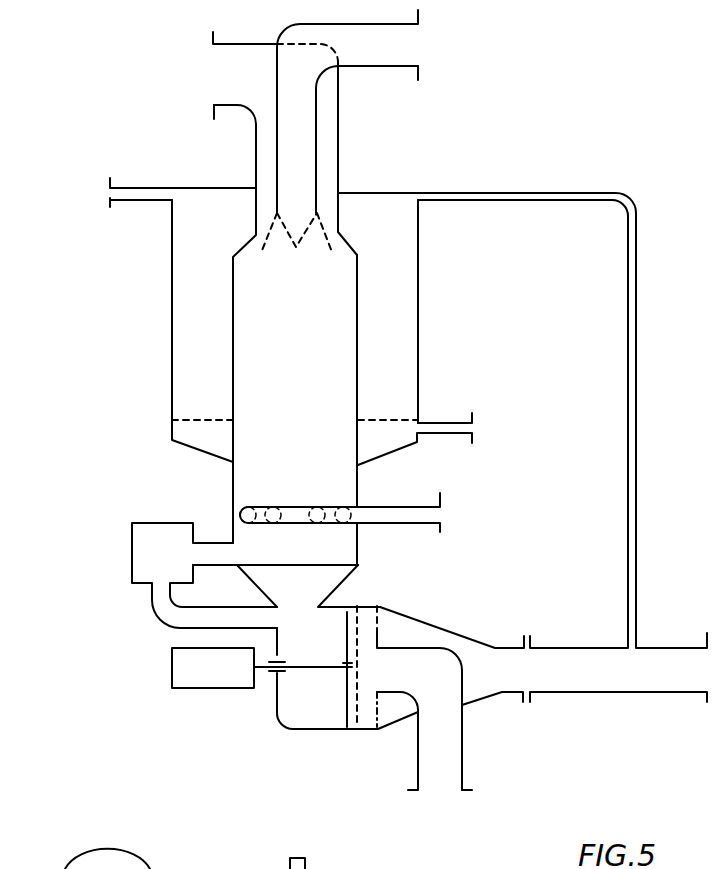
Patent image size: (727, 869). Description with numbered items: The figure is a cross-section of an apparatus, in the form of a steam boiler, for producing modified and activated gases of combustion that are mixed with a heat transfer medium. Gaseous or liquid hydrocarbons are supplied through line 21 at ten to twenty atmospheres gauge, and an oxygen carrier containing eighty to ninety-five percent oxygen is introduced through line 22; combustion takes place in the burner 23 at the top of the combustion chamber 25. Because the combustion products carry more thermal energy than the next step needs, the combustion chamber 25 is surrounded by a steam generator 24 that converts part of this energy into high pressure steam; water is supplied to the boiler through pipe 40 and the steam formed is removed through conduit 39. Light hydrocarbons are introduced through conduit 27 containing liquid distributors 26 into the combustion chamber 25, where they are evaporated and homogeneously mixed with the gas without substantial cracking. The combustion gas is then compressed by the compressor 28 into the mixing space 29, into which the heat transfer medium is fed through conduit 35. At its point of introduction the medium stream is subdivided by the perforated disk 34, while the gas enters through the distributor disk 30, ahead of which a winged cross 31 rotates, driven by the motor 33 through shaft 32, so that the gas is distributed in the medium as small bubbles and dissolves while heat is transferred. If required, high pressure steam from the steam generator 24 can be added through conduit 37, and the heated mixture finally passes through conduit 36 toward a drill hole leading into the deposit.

The line 21 is at (440, 46).
The line 22 is at (185, 74).
The burner 23 is at (343, 242).
The steam generator 24 is at (397, 223).
The combustion chamber 25 is at (335, 358).
The liquid distributors 26 is at (327, 505).
The conduit 27 is at (590, 517).
The compressor 28 is at (158, 539).
The mixing space 29 is at (337, 590).
The distributor disk 30 is at (355, 707).
The winged cross 31 is at (345, 712).
The shaft 32 is at (310, 668).
The motor 33 is at (237, 672).
The perforated disk 34 is at (397, 618).
The conduit 35 is at (440, 811).
The conduit 36 is at (570, 670).
The conduit 37 is at (628, 285).
The conduit 39 is at (98, 192).
The pipe 40 is at (585, 431).